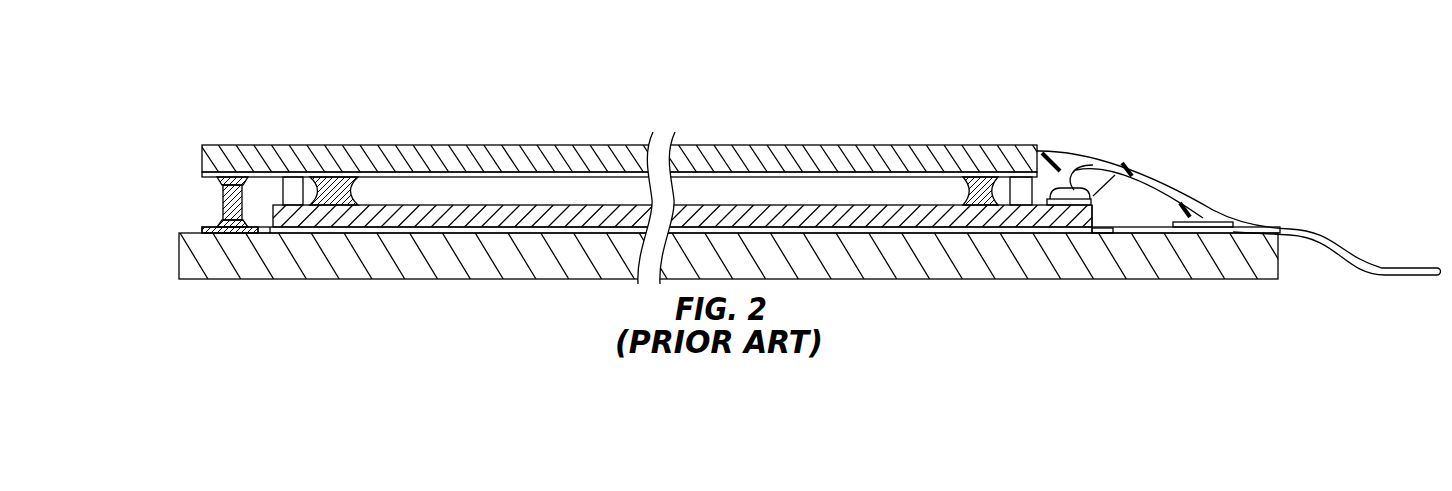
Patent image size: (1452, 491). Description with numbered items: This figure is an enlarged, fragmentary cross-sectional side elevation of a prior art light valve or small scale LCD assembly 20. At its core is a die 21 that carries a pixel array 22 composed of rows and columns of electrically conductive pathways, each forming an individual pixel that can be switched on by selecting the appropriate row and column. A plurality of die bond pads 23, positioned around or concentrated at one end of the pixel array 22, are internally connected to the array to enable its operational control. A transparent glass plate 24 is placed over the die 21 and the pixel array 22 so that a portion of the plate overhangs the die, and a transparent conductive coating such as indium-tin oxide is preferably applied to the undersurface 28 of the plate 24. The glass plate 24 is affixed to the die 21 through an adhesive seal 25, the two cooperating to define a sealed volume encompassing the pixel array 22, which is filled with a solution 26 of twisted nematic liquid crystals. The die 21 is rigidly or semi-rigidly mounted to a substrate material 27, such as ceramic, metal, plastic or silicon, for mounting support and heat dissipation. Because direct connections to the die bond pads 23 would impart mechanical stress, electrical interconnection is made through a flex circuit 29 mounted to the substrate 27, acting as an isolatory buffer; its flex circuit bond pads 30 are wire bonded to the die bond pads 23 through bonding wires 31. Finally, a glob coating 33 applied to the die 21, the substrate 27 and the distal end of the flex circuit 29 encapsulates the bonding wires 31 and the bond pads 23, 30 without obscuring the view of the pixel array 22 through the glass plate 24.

The LCD assembly 20 is at (1030, 62).
The die 21 is at (1097, 216).
The pixel array 22 is at (765, 205).
The die bond pads 23 is at (1103, 172).
The transparent glass plate 24 is at (600, 141).
The adhesive seal 25 is at (967, 181).
The solution of twisted nematic liquid crystals 26 is at (890, 182).
The substrate material 27 is at (325, 286).
The undersurface of the plate 28 is at (484, 185).
The flex circuit 29 is at (488, 230).
The flex circuit bond pads 30 is at (1222, 218).
The bonding wires 31 is at (1158, 172).
The glob coating 33 is at (1067, 150).